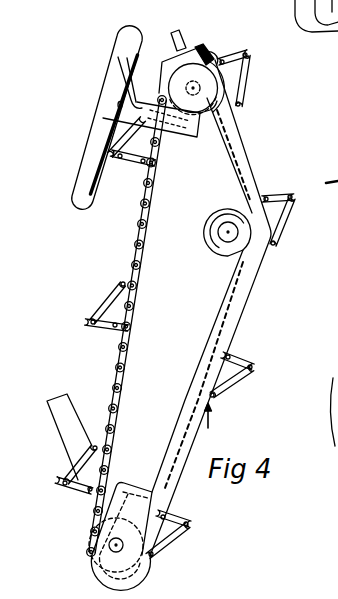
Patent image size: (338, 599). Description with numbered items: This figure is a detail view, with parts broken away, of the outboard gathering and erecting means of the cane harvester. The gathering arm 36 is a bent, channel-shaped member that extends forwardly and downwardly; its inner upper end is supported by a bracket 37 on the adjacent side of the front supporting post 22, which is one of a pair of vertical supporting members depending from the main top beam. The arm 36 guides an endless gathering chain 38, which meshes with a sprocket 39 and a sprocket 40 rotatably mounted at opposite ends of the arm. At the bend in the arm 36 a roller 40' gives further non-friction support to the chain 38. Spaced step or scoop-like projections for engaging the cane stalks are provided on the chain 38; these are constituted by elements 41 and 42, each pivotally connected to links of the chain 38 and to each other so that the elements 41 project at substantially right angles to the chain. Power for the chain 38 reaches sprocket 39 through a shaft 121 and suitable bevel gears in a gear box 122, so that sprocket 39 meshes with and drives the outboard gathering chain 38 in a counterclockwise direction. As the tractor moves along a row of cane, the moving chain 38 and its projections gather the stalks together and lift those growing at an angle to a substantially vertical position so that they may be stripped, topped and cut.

The vertical supporting member 22 is at (96, 127).
The gathering arm 36 is at (231, 318).
The bracket 37 is at (180, 133).
The gathering chain 38 is at (153, 207).
The sprocket 39 is at (210, 113).
The sprocket 40 is at (104, 537).
The roller 40' is at (218, 243).
The projection element 41 is at (268, 195).
The projection element 42 is at (281, 226).
The shaft 121 is at (186, 40).
The gear box 122 is at (208, 56).